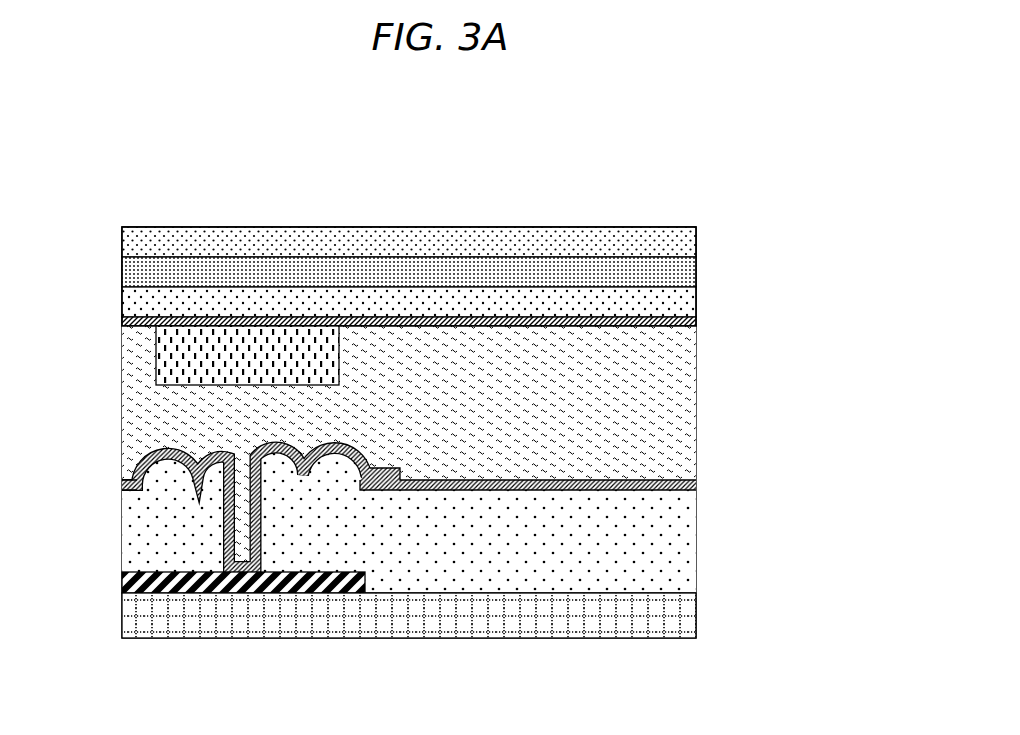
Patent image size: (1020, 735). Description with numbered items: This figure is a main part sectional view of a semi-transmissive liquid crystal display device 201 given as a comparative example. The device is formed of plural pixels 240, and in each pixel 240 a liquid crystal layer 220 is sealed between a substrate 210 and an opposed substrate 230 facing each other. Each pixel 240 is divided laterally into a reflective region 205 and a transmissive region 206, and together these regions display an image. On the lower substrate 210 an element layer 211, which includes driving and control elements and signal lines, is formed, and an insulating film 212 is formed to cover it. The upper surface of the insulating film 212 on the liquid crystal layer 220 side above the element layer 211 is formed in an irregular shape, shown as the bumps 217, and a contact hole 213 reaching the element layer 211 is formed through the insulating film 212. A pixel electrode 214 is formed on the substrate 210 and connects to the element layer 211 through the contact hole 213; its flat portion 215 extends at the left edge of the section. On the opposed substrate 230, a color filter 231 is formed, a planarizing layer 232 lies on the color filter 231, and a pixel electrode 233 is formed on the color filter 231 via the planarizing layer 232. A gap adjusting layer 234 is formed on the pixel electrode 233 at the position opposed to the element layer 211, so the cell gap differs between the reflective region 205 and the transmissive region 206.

The liquid crystal display device 201 is at (722, 130).
The reflective region 205 is at (403, 224).
The transmissive region 206 is at (696, 224).
The substrate 210 is at (672, 620).
The element layer 211 is at (243, 595).
The insulating film 212 is at (672, 556).
The contact hole 213 is at (242, 462).
The pixel electrode 214 is at (435, 444).
The flat portion 215 is at (132, 482).
The projection portion 217 is at (170, 455).
The liquid crystal layer 220 is at (657, 378).
The substrate 230 is at (673, 243).
The color filter 231 is at (675, 270).
The planarizing layer 232 is at (675, 297).
The pixel electrode 233 is at (697, 325).
The gap adjusting layer 234 is at (173, 343).
The pixel 240 is at (706, 220).